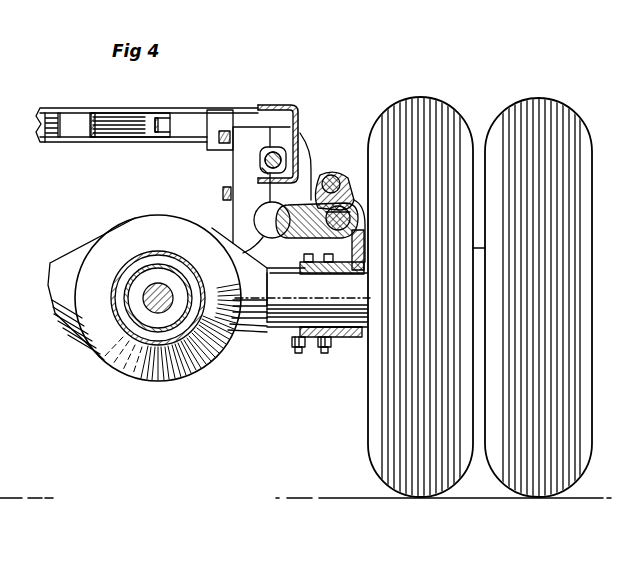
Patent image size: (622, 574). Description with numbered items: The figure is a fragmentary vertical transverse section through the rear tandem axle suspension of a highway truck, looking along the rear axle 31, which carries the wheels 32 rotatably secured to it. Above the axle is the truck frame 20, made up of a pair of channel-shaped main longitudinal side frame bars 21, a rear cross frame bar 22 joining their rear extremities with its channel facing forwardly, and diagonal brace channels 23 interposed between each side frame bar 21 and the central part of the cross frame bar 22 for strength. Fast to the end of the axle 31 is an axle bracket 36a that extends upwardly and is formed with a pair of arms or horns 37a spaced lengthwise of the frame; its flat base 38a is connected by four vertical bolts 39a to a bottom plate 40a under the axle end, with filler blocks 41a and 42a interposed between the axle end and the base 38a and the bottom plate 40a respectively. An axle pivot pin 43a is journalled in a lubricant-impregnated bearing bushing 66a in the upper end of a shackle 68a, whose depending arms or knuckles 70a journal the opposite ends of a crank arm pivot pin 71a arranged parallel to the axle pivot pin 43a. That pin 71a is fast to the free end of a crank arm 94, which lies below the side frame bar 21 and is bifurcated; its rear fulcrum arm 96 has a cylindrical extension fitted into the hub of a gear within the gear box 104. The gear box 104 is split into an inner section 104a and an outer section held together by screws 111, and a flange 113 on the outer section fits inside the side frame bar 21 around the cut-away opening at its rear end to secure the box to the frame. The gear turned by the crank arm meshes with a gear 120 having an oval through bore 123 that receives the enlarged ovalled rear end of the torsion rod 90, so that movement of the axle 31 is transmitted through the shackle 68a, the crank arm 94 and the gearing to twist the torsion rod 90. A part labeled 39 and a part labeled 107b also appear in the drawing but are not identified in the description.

The frame 20 is at (45, 148).
The main longitudinal side frame bar 21 is at (287, 121).
The cross frame bar 22 is at (50, 108).
The diagonal brace channel 23 is at (118, 118).
The rear tandem axle 31 is at (302, 300).
The wheels 32 is at (441, 497).
The axle bracket 36a is at (364, 250).
The arms or horns 37a is at (350, 230).
The flat base 38a is at (279, 289).
The drive drum 39 is at (167, 375).
The vertical bolts 39a is at (307, 340).
The bottom plate 40a is at (335, 343).
The filler block 41a is at (326, 304).
The filler block 42a is at (290, 340).
The axle pivot pin 43a is at (330, 170).
The bearing bushing 66a is at (335, 180).
The shackle 68a is at (364, 194).
The arms or knuckles 70a is at (350, 206).
The crank arm pivot pin 71a is at (350, 217).
The torsion rod 90 is at (266, 163).
The crank arm 94 is at (265, 241).
The rear fulcrum arm 96 is at (274, 220).
The gear box 104 is at (235, 232).
The inner section 104a is at (232, 160).
The bracket arm 107b is at (303, 145).
The screws 111 is at (223, 196).
The flange 113 is at (285, 118).
The gear 120 is at (263, 180).
The through bore 123 is at (262, 150).